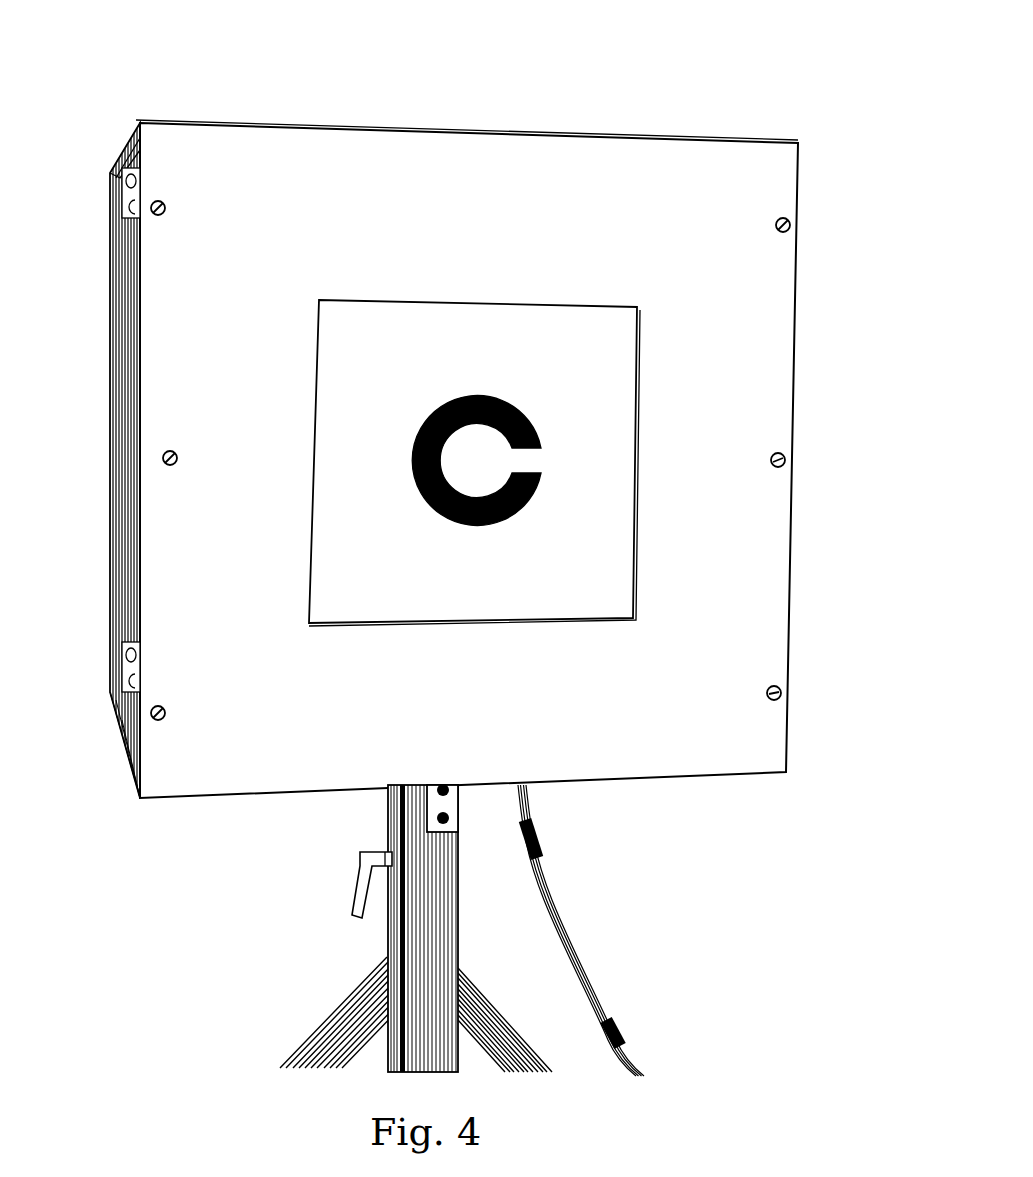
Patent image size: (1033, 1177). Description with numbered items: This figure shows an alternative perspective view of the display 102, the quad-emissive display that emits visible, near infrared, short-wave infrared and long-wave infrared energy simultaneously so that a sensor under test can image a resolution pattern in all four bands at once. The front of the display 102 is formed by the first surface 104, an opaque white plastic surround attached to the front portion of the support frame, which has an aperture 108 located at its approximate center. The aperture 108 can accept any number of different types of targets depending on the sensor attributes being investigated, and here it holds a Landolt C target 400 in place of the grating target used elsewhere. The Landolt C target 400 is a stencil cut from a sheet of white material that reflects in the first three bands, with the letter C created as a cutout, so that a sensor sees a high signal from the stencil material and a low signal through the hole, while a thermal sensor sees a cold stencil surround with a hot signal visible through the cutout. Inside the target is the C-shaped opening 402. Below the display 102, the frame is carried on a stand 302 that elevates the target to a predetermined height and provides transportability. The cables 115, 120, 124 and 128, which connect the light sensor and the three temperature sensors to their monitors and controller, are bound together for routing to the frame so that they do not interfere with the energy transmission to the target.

The display 102 is at (606, 104).
The first surface 104 is at (223, 741).
The aperture 108 is at (340, 622).
The Landolt C target 400 is at (585, 563).
The optotype 402 is at (527, 413).
The stand 302 is at (400, 926).
The light sensor 115 is at (555, 890).
The electrical line 120 is at (595, 930).
The electrical line 124 is at (595, 930).
The electrical line 128 is at (595, 930).